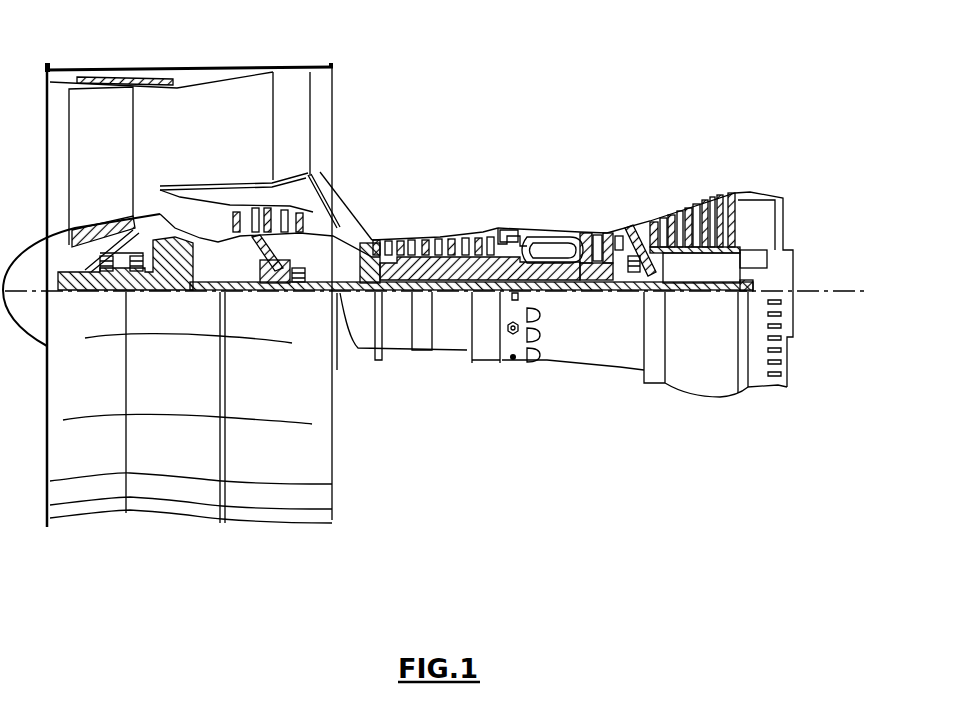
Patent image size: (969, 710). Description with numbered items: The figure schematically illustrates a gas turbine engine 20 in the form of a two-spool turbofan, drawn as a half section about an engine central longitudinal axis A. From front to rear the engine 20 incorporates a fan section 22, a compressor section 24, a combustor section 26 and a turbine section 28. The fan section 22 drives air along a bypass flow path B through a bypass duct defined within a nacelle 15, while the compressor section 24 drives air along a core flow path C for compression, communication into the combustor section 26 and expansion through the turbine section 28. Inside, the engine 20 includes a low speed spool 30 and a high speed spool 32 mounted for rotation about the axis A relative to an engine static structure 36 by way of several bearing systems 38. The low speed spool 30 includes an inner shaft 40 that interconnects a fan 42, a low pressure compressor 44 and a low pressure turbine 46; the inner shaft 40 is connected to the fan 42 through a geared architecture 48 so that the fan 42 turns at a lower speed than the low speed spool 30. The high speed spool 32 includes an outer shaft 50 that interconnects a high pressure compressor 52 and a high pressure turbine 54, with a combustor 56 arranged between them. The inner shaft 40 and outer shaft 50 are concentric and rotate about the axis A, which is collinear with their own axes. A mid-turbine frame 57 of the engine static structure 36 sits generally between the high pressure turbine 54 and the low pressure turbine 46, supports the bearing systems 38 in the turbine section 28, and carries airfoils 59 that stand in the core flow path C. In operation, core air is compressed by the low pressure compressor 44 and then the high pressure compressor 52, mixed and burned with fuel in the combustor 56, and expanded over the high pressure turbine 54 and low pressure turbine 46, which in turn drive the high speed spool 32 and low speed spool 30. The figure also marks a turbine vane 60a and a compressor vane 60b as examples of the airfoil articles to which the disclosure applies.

The gas turbine engine 20 is at (555, 101).
The fan section 22 is at (131, 58).
The nacelle 15 is at (190, 70).
The fan 42 is at (88, 170).
The low pressure compressor 44 is at (283, 212).
The compressor section 24 is at (372, 205).
The high pressure compressor 52 is at (433, 255).
The compressor vane 60b is at (483, 237).
The high speed spool 32 is at (497, 233).
The combustor section 26 is at (546, 203).
The combustor 56 is at (540, 247).
The high pressure turbine 54 is at (635, 214).
The mid-turbine frame 57 is at (628, 233).
The turbine vane 60a is at (650, 220).
The turbine section 28 is at (662, 176).
The low pressure turbine 46 is at (697, 193).
The airfoils 59 is at (652, 283).
The bearing systems 38 is at (298, 283).
The low speed spool 30 is at (453, 307).
The outer shaft 50 is at (547, 293).
The inner shaft 40 is at (352, 335).
The engine static structure 36 is at (487, 366).
The geared architecture 48 is at (190, 277).
The engine central longitudinal axis A is at (853, 290).
The bypass flow path B is at (152, 128).
The core flow path C is at (190, 208).